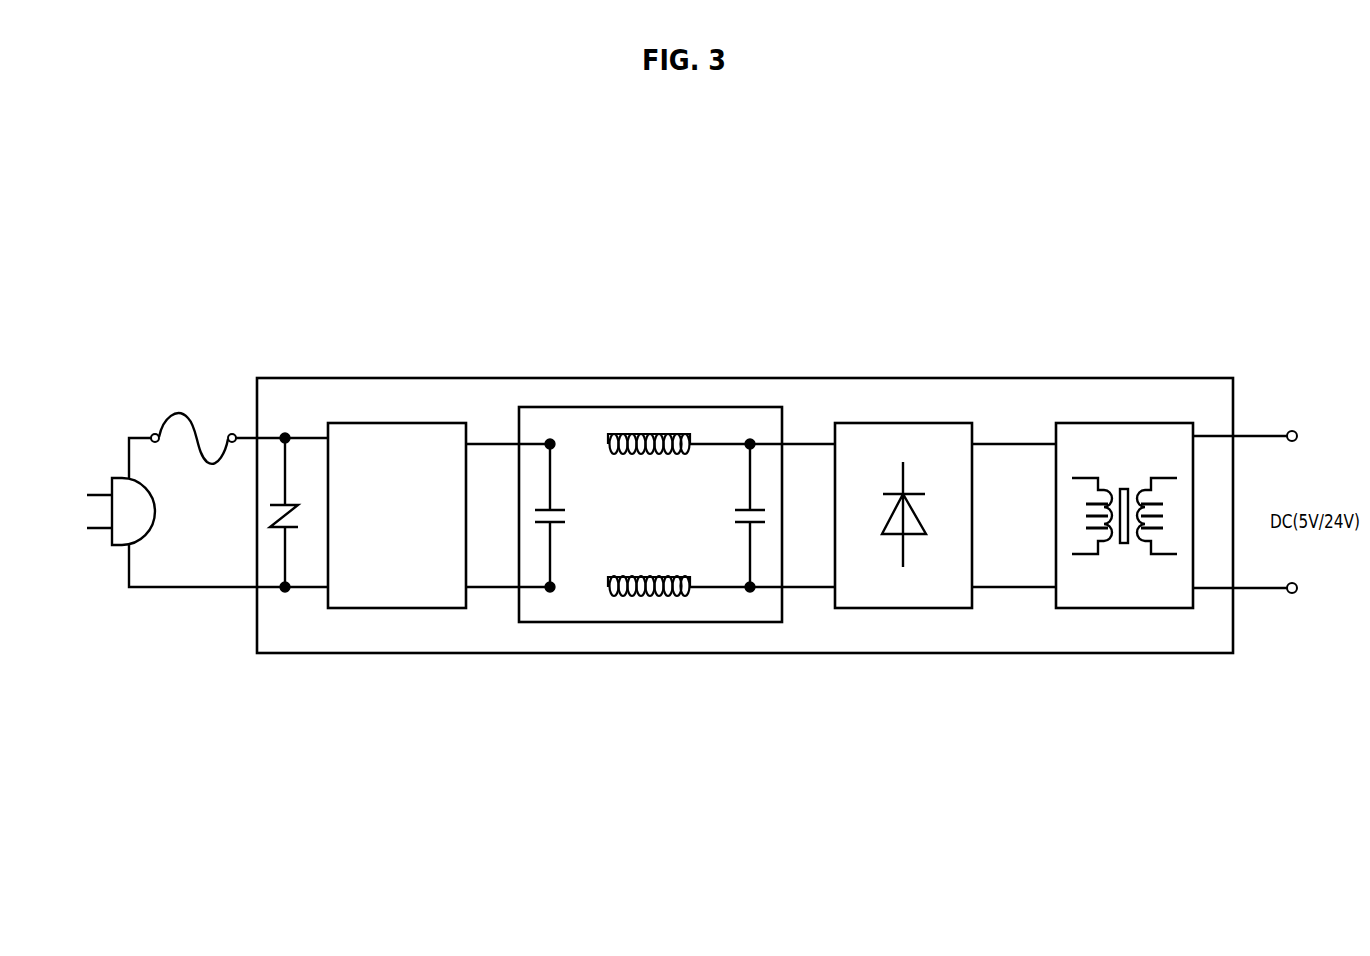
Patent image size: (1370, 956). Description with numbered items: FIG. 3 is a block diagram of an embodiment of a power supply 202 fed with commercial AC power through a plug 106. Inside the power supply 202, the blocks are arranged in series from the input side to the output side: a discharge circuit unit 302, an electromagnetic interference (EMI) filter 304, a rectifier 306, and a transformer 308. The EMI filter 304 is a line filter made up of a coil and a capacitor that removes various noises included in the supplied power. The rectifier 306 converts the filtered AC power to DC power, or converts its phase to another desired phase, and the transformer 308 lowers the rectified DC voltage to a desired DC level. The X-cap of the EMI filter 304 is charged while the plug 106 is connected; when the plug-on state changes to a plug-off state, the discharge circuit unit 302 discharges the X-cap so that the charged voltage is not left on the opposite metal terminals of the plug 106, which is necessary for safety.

The plug 106 is at (120, 487).
The power supply 202 is at (323, 378).
The discharge circuit unit 302 is at (412, 423).
The electromagnetic interference (EMI) filter 304 is at (659, 407).
The rectifier 306 is at (905, 423).
The transformer 308 is at (1126, 423).